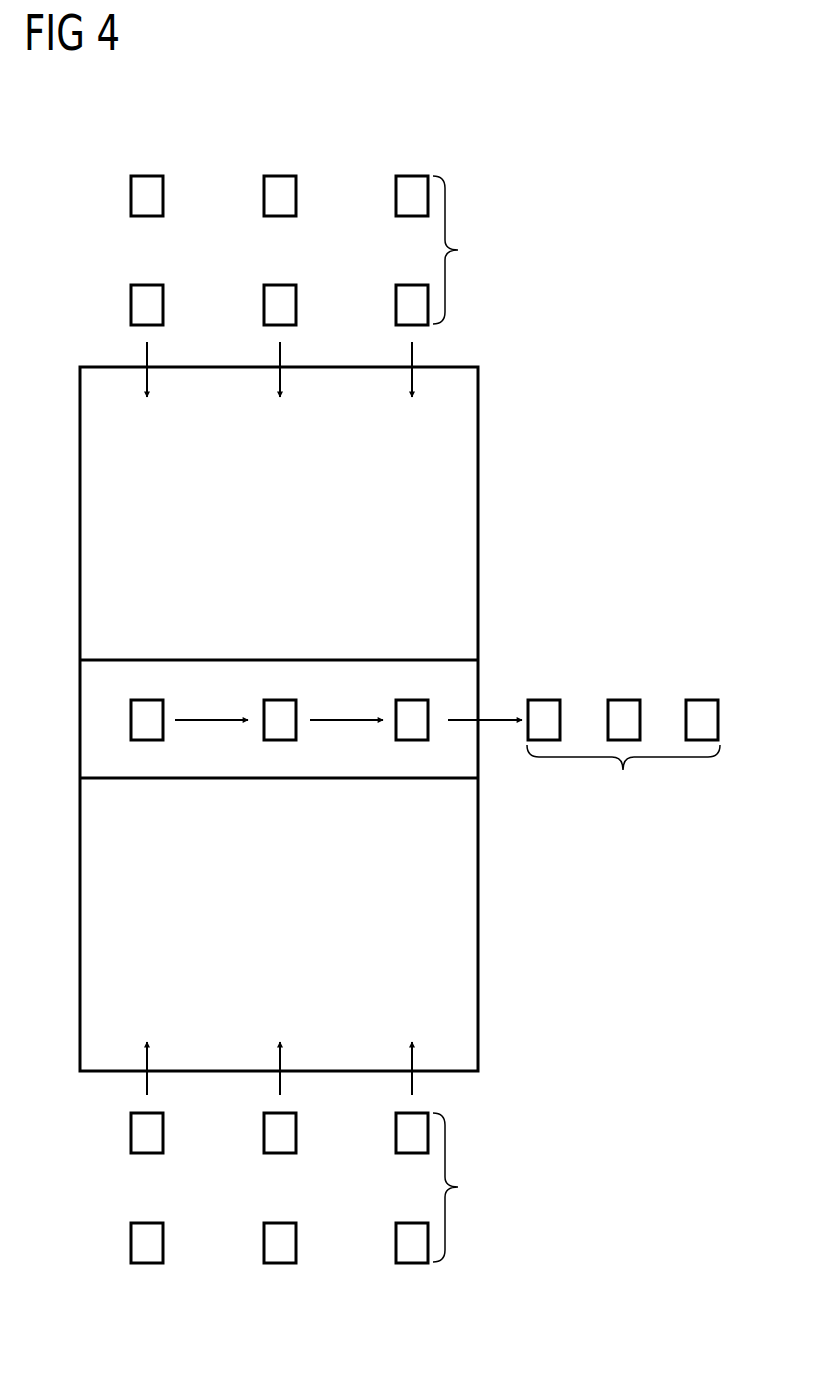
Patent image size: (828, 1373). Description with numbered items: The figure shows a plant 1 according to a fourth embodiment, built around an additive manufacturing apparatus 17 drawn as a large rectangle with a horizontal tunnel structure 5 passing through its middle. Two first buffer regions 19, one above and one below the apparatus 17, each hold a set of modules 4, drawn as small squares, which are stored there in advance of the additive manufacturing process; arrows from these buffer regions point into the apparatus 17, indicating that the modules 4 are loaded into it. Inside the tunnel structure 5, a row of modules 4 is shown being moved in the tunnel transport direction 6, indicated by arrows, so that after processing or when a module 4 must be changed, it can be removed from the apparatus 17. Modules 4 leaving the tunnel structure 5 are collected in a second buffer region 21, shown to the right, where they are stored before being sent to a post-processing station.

The plant 1 is at (478, 108).
The module 4 is at (129, 197).
The tunnel structure 5 is at (107, 717).
The tunnel transport direction 6 is at (338, 719).
The apparatus 17 is at (488, 327).
The first buffer region 19 is at (462, 719).
The second buffer region 21 is at (623, 777).